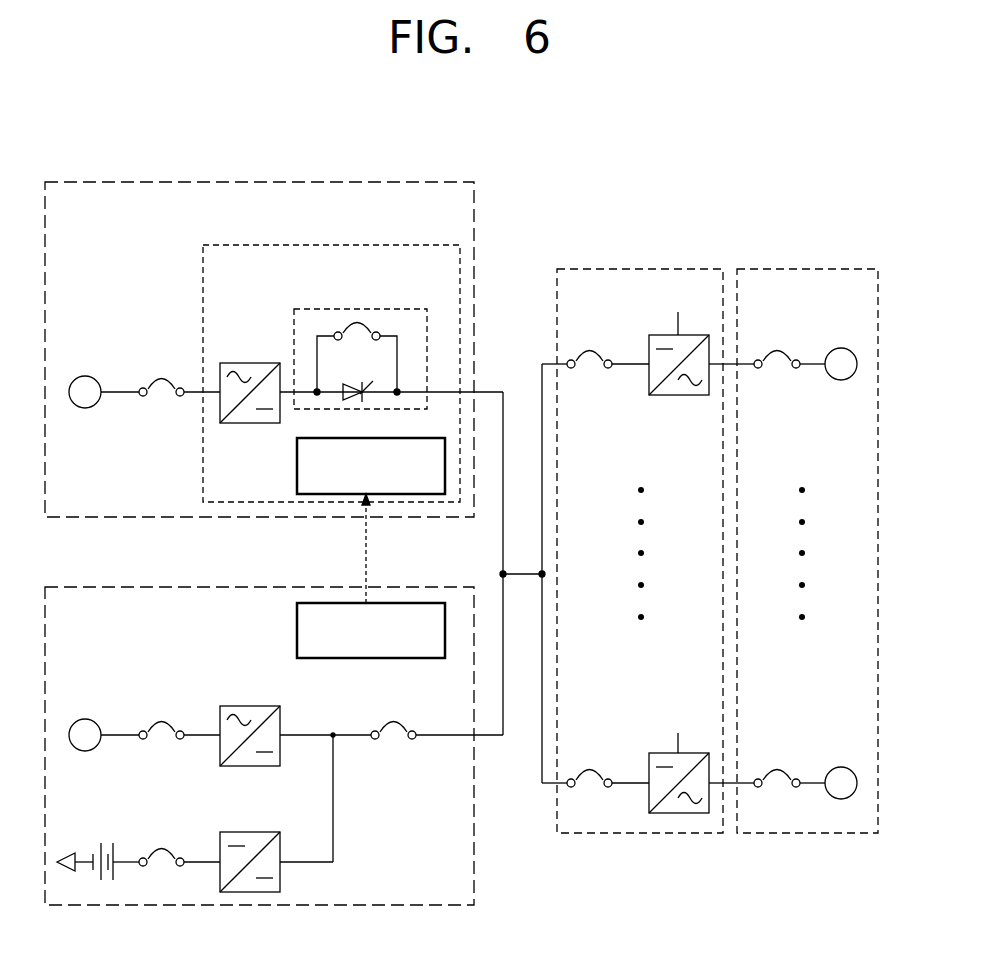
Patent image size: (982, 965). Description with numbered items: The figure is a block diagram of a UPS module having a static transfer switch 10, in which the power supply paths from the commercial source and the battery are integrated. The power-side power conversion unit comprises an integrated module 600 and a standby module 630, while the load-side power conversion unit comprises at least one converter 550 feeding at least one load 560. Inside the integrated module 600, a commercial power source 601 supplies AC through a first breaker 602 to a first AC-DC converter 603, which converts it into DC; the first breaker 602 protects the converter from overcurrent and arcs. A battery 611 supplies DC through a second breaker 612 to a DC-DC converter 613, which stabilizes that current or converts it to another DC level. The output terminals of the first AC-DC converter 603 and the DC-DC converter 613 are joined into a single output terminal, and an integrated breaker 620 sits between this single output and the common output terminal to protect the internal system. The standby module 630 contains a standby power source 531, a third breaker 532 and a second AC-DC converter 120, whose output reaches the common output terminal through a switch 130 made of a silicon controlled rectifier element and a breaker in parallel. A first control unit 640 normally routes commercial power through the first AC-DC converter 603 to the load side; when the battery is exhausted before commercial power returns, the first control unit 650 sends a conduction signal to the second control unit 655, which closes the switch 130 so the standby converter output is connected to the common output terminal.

The standby module 630 is at (252, 182).
The static transfer switch 10 is at (329, 245).
The switch 130 is at (360, 309).
The second AC-DC converter 120 is at (250, 363).
The standby power source 531 is at (85, 376).
The third breaker 532 is at (163, 378).
The second control unit 655 is at (295, 467).
The first control unit 650 is at (368, 555).
The integrated module 600 is at (251, 587).
The first control unit 640 is at (295, 630).
The commercial power source 601 is at (85, 719).
The first breaker 602 is at (163, 720).
The first AC-DC converter 603 is at (251, 706).
The integrated breaker 620 is at (395, 721).
The battery 611 is at (101, 843).
The second breaker 612 is at (163, 848).
The DC-DC converter 613 is at (250, 832).
The converter 550 is at (640, 268).
The load 560 is at (807, 268).